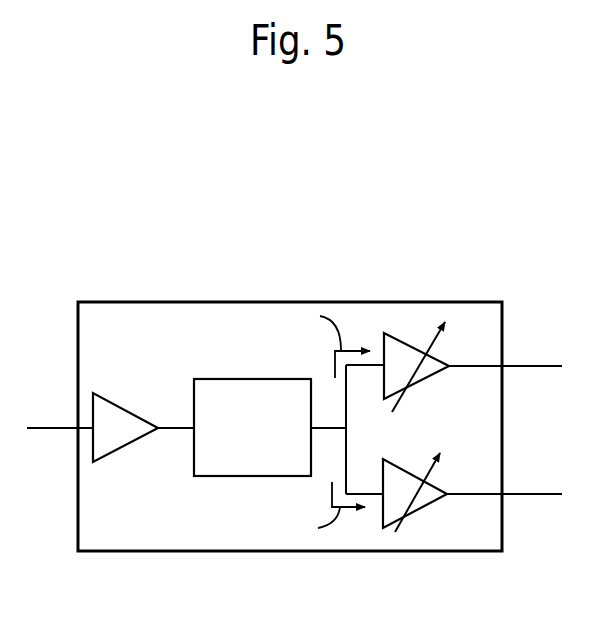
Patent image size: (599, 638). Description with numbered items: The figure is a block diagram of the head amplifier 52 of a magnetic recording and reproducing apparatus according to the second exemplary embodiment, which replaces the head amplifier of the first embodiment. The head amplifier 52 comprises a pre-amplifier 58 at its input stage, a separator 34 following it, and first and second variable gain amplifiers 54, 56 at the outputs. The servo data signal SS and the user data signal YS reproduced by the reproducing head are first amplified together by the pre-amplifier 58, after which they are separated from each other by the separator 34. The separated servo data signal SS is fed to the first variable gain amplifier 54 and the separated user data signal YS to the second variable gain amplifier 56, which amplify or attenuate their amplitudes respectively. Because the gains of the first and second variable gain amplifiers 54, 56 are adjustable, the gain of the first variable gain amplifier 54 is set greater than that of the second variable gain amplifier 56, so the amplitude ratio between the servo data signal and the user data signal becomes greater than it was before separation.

The head amplifier 52 is at (341, 211).
The pre-amplifier 58 is at (108, 456).
The separator 34 is at (233, 384).
The first variable gain amplifier 54 is at (403, 340).
The second variable gain amplifier 56 is at (396, 524).